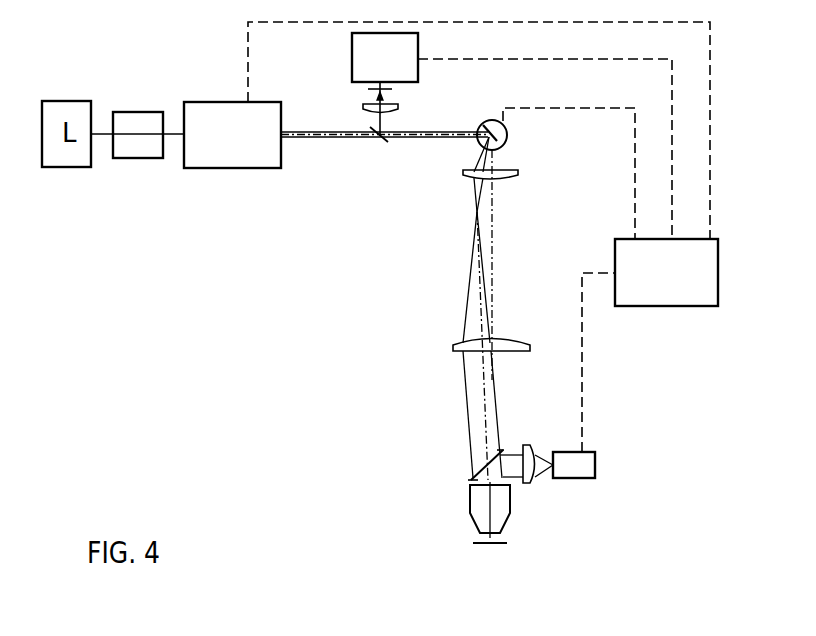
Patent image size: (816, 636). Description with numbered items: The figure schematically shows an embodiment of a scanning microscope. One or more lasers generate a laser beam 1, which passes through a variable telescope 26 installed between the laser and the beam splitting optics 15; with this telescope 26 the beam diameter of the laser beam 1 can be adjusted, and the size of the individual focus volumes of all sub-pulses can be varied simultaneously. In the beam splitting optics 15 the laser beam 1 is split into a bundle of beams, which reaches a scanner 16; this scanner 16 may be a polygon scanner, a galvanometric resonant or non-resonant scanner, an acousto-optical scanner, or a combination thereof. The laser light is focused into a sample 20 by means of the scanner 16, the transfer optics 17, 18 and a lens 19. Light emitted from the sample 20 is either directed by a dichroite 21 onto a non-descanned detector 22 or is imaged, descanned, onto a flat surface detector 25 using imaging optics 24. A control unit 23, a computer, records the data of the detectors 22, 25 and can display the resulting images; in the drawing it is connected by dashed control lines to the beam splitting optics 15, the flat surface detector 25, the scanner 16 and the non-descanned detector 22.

The laser beam 1 is at (137, 119).
The variable telescope 26 is at (138, 121).
The beam splitting optics 15 is at (243, 147).
The flat surface detector 25 is at (398, 70).
The imaging optics 24 is at (397, 112).
The scanner 16 is at (556, 173).
The transfer optics 17 is at (477, 177).
The transfer optics 18 is at (477, 352).
The dichroite 21 is at (473, 463).
The lens 19 is at (503, 510).
The sample 20 is at (490, 559).
The non-descanned detector 22 is at (588, 377).
The control unit 23 is at (679, 283).